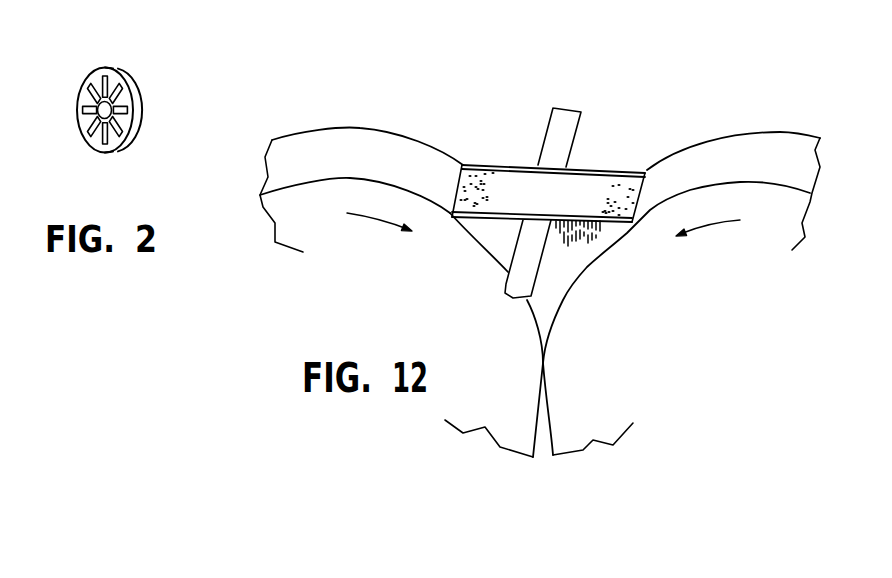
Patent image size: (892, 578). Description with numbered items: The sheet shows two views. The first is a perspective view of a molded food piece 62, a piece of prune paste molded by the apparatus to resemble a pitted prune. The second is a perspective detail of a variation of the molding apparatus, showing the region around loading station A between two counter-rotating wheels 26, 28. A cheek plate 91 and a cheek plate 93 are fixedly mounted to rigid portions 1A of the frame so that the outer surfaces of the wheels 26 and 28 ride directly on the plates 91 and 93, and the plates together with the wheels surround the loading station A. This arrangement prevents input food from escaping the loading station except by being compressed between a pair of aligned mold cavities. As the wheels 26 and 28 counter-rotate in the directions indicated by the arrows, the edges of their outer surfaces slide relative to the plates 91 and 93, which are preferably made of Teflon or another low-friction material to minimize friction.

In FIG. 2, the molded food piece 62 is at (135, 112).
In FIG. 12, the wheel 26 is at (357, 150).
In FIG. 12, the wheel 28 is at (740, 150).
In FIG. 12, the cheek plate 93 is at (598, 167).
In FIG. 12, the rigid portion of frame 1A is at (562, 127).
In FIG. 12, the cheek plate 91 is at (600, 232).
In FIG. 12, the loading station A is at (497, 186).